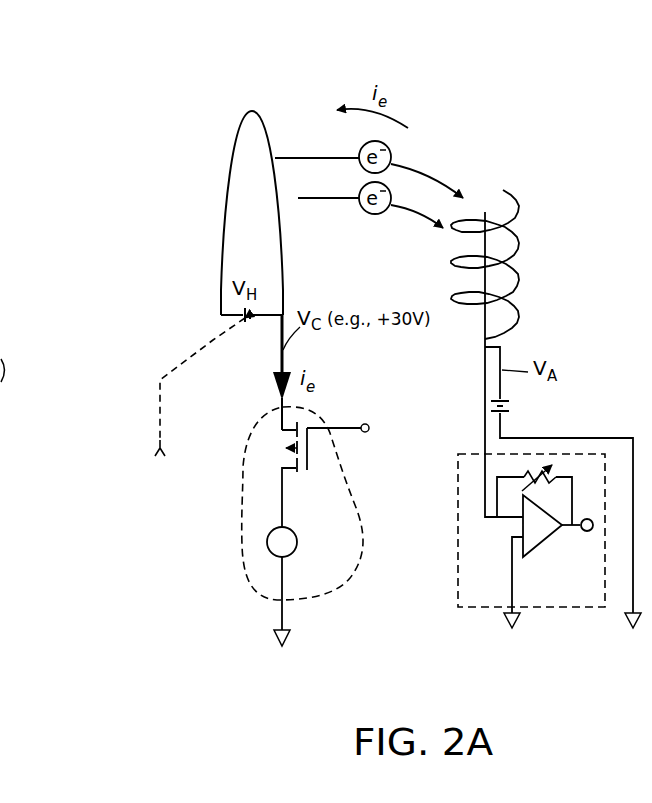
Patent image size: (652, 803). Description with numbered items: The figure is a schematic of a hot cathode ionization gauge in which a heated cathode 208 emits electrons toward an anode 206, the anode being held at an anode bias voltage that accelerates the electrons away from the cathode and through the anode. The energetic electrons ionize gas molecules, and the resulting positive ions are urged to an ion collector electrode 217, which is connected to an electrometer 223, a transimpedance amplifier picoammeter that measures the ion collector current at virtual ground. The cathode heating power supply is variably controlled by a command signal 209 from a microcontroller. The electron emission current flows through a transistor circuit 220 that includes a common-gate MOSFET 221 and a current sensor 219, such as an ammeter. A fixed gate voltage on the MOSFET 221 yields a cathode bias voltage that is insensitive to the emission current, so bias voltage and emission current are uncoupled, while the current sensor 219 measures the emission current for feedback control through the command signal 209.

The cathode 208 is at (250, 111).
The command signal 209 is at (213, 340).
The anode 206 is at (520, 237).
The ion collector electrode 217 is at (487, 283).
The transistor circuit 220 is at (241, 497).
The common-gate MOSFET 221 is at (312, 477).
The current sensor 219 is at (296, 550).
The electrometer 223 is at (457, 565).